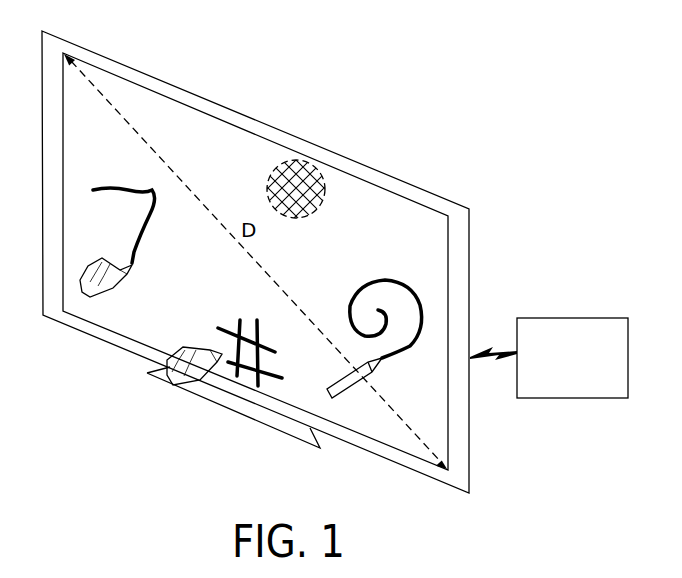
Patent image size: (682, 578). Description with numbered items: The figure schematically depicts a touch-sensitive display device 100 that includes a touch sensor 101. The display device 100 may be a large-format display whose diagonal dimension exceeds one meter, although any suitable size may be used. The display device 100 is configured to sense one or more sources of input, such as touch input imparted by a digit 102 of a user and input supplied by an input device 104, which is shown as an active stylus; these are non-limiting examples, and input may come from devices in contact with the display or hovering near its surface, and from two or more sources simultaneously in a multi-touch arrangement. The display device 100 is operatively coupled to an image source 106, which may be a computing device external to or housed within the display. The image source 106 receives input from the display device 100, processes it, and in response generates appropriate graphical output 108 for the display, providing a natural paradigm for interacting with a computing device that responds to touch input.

The touch-sensitive display device 100 is at (308, 68).
The touch sensor 101 is at (320, 170).
The digit 102 is at (133, 270).
The input device 104 is at (331, 394).
The image source 106 is at (557, 392).
The graphical output 108 is at (128, 187).